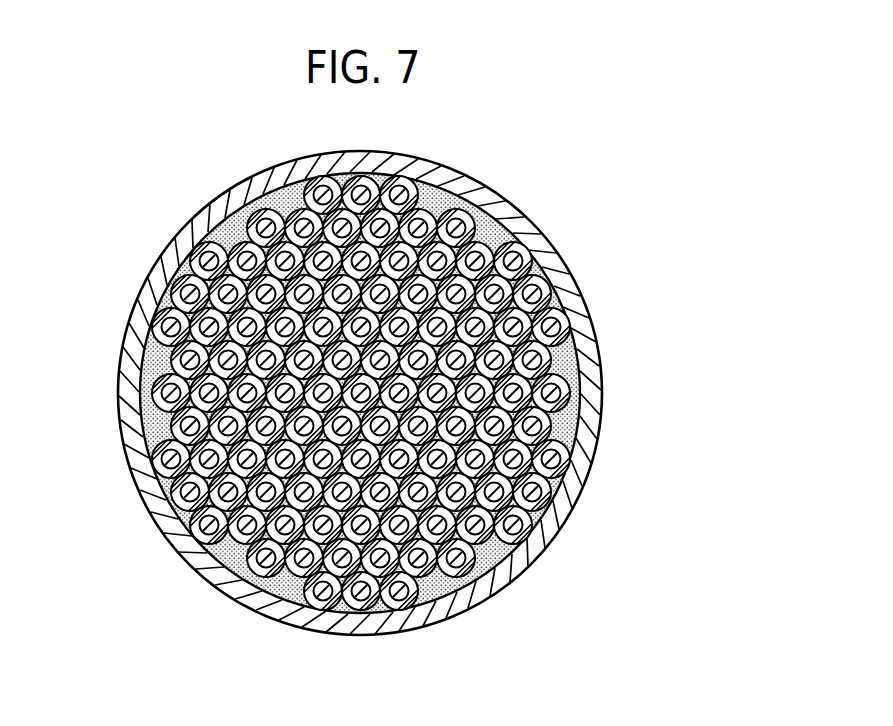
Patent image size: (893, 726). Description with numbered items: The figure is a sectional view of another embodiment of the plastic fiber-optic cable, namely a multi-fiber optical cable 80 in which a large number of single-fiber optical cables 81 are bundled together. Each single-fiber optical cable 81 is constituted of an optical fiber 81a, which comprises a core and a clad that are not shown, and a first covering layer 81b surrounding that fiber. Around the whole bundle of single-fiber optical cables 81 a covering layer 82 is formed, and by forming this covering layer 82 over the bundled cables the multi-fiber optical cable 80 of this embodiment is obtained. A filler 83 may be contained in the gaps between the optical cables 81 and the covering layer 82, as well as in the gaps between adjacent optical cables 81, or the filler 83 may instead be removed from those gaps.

The multi-fiber optical cable 80 is at (126, 201).
The single-fiber optical cable 81 is at (687, 123).
The optical fiber 81a is at (503, 238).
The first covering layer 81b is at (525, 257).
The covering layer 82 is at (117, 420).
The filler 83 is at (207, 572).